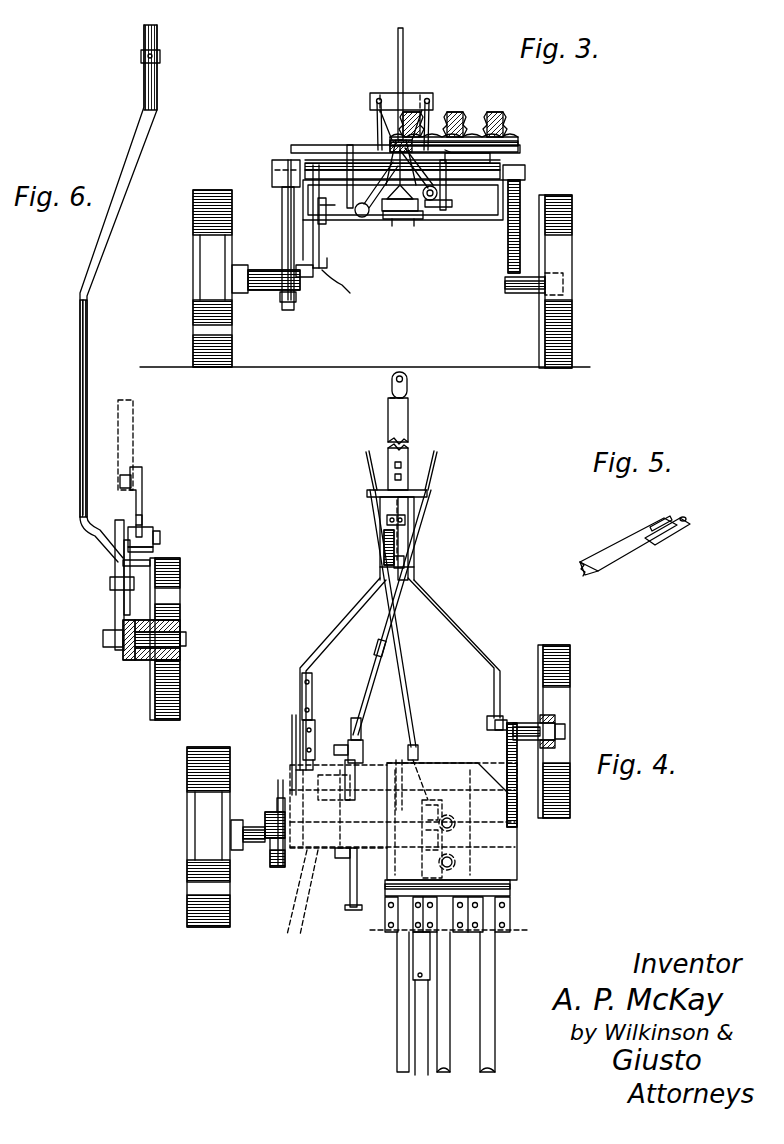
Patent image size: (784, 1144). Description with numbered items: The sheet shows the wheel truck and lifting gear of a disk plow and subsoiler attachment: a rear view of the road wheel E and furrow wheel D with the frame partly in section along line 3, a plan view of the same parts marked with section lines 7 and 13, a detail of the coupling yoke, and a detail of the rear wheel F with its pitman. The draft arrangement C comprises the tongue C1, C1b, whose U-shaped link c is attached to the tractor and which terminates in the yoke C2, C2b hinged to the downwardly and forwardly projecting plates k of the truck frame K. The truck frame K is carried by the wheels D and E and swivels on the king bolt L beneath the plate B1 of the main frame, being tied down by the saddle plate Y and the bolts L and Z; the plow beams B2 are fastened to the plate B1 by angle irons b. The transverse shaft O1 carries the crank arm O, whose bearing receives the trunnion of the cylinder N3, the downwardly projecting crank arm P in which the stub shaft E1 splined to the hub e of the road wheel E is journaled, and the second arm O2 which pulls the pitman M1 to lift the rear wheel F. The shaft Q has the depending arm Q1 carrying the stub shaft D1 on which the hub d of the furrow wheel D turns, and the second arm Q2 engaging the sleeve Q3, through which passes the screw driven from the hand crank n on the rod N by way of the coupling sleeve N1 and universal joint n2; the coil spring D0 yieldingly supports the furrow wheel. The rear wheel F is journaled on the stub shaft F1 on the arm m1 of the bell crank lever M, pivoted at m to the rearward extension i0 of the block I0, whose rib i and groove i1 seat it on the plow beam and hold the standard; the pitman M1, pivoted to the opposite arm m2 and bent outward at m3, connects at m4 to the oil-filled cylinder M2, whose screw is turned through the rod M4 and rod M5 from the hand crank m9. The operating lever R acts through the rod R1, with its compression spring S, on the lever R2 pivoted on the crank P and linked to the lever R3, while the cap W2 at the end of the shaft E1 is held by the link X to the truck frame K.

In FIG. 3, the operating lever R is at (404, 32).
In FIG. 4, the operating lever R is at (392, 570).
In FIG. 3, the yoke C2 is at (480, 221).
In FIG. 4, the yoke C2 is at (428, 494).
In FIG. 3, the top bracket C2b is at (420, 100).
In FIG. 3, the hand crank n is at (433, 117).
In FIG. 4, the hand crank n is at (438, 452).
In FIG. 3, the plow beams B2 is at (492, 104).
In FIG. 6, the plow beams B2 is at (134, 432).
In FIG. 4, the plow beams B2 is at (473, 1073).
In FIG. 3, the angle irons b is at (505, 137).
In FIG. 4, the angle irons b is at (512, 932).
In FIG. 3, the shaft Q is at (346, 153).
In FIG. 4, the shaft Q is at (440, 788).
In FIG. 3, the truck frame K is at (299, 143).
In FIG. 4, the truck frame K is at (312, 876).
In FIG. 3, the transverse shaft O1 is at (322, 163).
In FIG. 4, the transverse shaft O1 is at (302, 892).
In FIG. 3, the second arm Q2 is at (352, 145).
In FIG. 4, the second arm Q2 is at (345, 770).
In FIG. 3, the hand crank m9 is at (375, 122).
In FIG. 4, the hand crank m9 is at (367, 452).
In FIG. 3, the crank arm P is at (282, 192).
In FIG. 4, the crank arm P is at (265, 812).
In FIG. 3, the lever R3 is at (288, 243).
In FIG. 4, the lever R3 is at (285, 868).
In FIG. 3, the road wheel E is at (193, 324).
In FIG. 4, the road wheel E is at (186, 836).
In FIG. 3, the hub e is at (240, 294).
In FIG. 4, the hub e is at (242, 849).
In FIG. 3, the stub shaft E1 is at (262, 291).
In FIG. 4, the stub shaft E1 is at (254, 848).
In FIG. 3, the plate W2 is at (315, 280).
In FIG. 3, the link X is at (339, 293).
In FIG. 4, the link X is at (296, 770).
In FIG. 3, the crank arm O is at (360, 218).
In FIG. 4, the crank arm O is at (343, 862).
In FIG. 3, the cylinder N3 is at (395, 218).
In FIG. 4, the cylinder N3 is at (352, 880).
In FIG. 3, the tongue C1 is at (403, 222).
In FIG. 4, the tongue C1 is at (409, 413).
In FIG. 4, the pole bar C1b is at (300, 711).
In FIG. 3, the rear wheel operating rod or pitman M1 is at (430, 215).
In FIG. 6, the rear wheel operating rod or pitman M1 is at (80, 292).
In FIG. 4, the rear wheel operating rod or pitman M1 is at (420, 1038).
In FIG. 3, the second arm O2 is at (452, 193).
In FIG. 3, the coil spring D0 is at (523, 196).
In FIG. 3, the stub shaft D1 is at (528, 293).
In FIG. 4, the stub shaft D1 is at (548, 712).
In FIG. 3, the furrow wheel D is at (572, 346).
In FIG. 4, the furrow wheel D is at (570, 657).
In FIG. 5, the draft arrangement C is at (640, 548).
In FIG. 4, the draft arrangement C is at (410, 553).
In FIG. 5, the U-shaped link c is at (692, 519).
In FIG. 4, the U-shaped link c is at (410, 383).
In FIG. 6, the cylinder M2 is at (141, 30).
In FIG. 4, the cylinder M2 is at (420, 958).
In FIG. 6, the connection m4 is at (140, 56).
In FIG. 6, the outward bend m3 is at (80, 518).
In FIG. 6, the rib i is at (120, 480).
In FIG. 6, the groove i1 is at (143, 500).
In FIG. 6, the rearward extension i0 is at (143, 523).
In FIG. 6, the pivot m is at (160, 537).
In FIG. 6, the block I0 is at (149, 554).
In FIG. 6, the bell crank lever M is at (152, 573).
In FIG. 6, the arm m1 is at (115, 620).
In FIG. 6, the arm m2 is at (115, 598).
In FIG. 6, the stub shaft F1 is at (170, 638).
In FIG. 6, the rear wheel F is at (150, 691).
In FIG. 4, the coil spring S is at (384, 555).
In FIG. 4, the rod N is at (384, 642).
In FIG. 4, the rod M5 is at (403, 675).
In FIG. 4, the coupling sleeve N1 is at (372, 701).
In FIG. 4, the plates k is at (304, 693).
In FIG. 4, the rod R1 is at (292, 738).
In FIG. 4, the universal joint n2 is at (351, 732).
In FIG. 4, the sleeve Q3 is at (363, 754).
In FIG. 4, the rod M4 is at (416, 750).
In FIG. 4, the king bolt L is at (447, 818).
In FIG. 4, the saddle plate Y is at (442, 840).
In FIG. 4, the bolt Z is at (455, 862).
In FIG. 4, the lever R2 is at (277, 798).
In FIG. 4, the plate B1 is at (510, 892).
In FIG. 4, the hub d is at (548, 735).
In FIG. 4, the arm Q1 is at (516, 740).
In FIG. 4, the section line 7 is at (400, 723).
In FIG. 4, the section line 13 is at (402, 800).
In FIG. 4, the section line 3 is at (522, 1023).